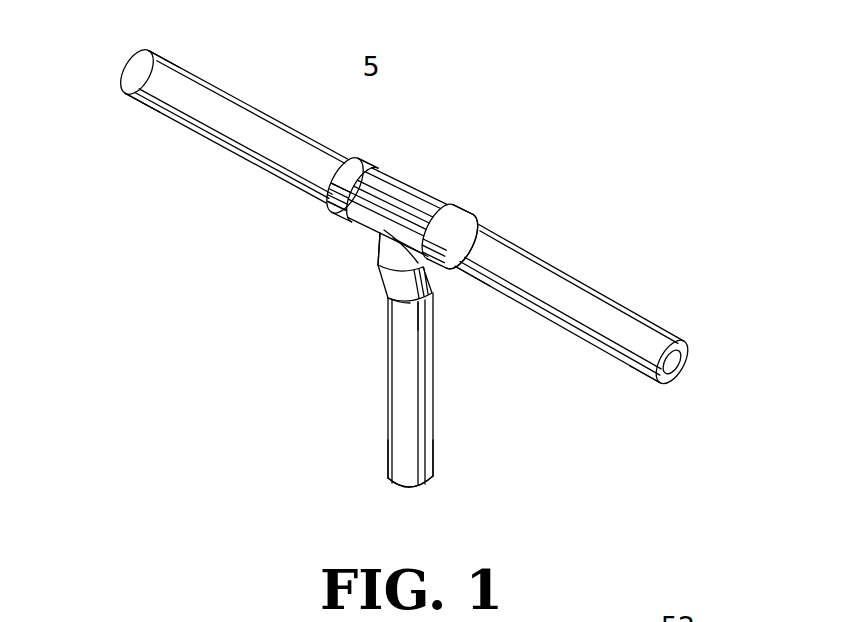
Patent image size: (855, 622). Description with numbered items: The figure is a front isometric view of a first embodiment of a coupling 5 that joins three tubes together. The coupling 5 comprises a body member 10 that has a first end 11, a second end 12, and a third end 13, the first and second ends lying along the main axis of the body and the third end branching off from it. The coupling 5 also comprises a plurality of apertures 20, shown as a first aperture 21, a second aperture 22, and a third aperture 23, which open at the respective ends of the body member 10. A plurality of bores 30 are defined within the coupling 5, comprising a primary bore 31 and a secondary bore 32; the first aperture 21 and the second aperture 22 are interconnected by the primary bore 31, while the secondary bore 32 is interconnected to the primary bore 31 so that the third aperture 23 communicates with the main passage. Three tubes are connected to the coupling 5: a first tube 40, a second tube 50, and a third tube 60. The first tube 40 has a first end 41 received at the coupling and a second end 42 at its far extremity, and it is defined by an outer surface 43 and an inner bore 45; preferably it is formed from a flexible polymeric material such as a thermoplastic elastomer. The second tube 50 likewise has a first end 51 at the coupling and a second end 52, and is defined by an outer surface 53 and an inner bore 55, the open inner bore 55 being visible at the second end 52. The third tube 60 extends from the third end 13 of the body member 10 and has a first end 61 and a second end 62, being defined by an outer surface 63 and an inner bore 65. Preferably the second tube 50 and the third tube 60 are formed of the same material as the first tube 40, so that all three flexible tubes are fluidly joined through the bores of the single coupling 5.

The coupling 5 is at (365, 82).
The body member 10 is at (408, 187).
The first end 11 is at (348, 162).
The second end 12 is at (478, 228).
The third end 13 is at (383, 288).
The plurality of apertures 20 is at (517, 150).
The first aperture 21 is at (332, 168).
The second aperture 22 is at (468, 238).
The third aperture 23 is at (390, 303).
The plurality of bores 30 is at (305, 278).
The primary bore 31 is at (412, 210).
The secondary bore 32 is at (388, 252).
The first tube 40 is at (212, 125).
The first end 41 is at (330, 199).
The second end 42 is at (127, 90).
The outer surface 43 is at (150, 49).
The inner bore 45 is at (128, 72).
The second tube 50 is at (578, 335).
The first end 51 is at (462, 278).
The second end 52 is at (662, 382).
The outer surface 53 is at (685, 348).
The inner bore 55 is at (683, 368).
The third tube 60 is at (392, 403).
The first end 61 is at (423, 302).
The second end 62 is at (433, 477).
The outer surface 63 is at (388, 479).
The inner bore 65 is at (410, 488).